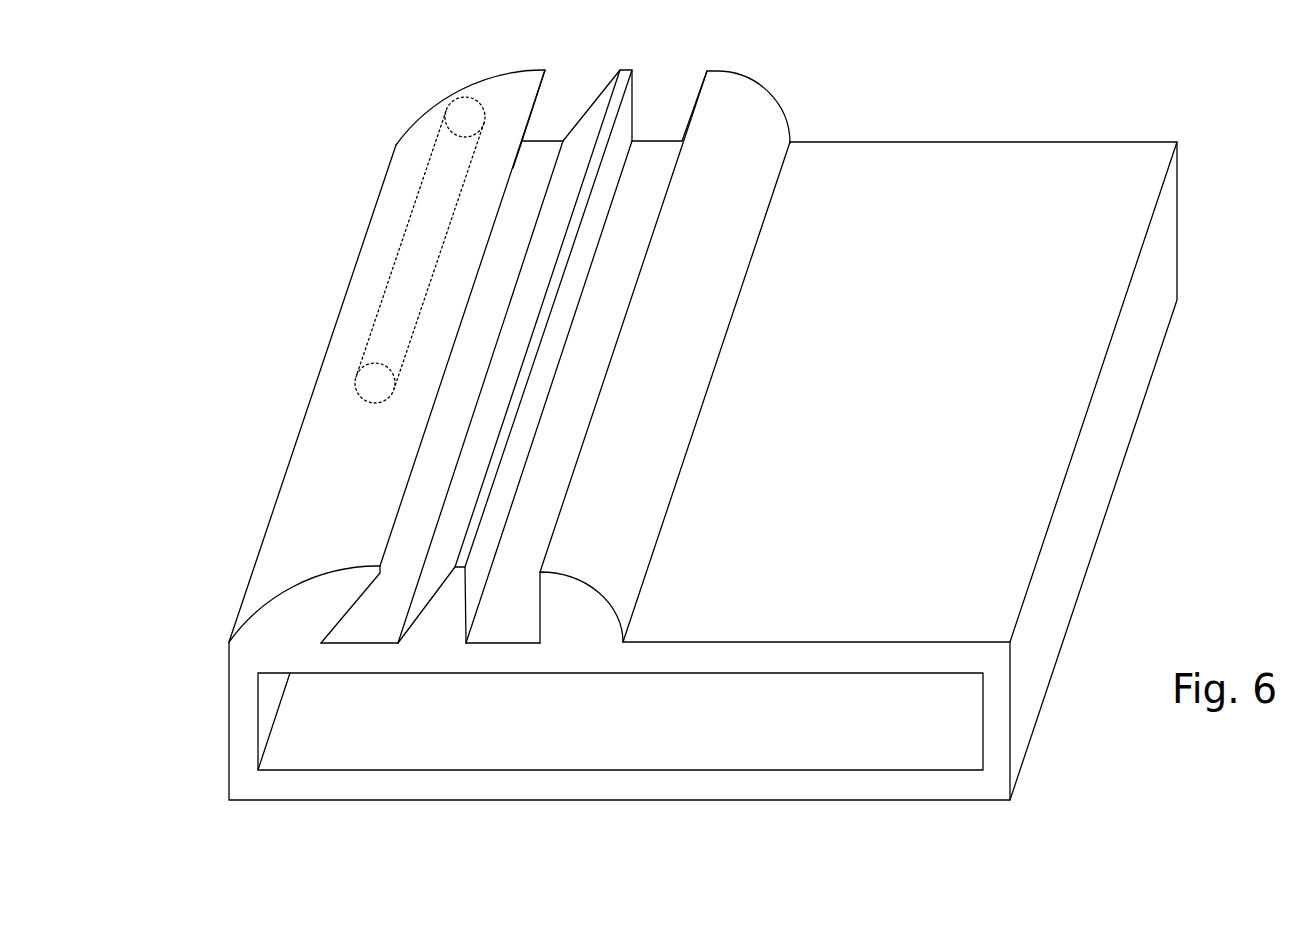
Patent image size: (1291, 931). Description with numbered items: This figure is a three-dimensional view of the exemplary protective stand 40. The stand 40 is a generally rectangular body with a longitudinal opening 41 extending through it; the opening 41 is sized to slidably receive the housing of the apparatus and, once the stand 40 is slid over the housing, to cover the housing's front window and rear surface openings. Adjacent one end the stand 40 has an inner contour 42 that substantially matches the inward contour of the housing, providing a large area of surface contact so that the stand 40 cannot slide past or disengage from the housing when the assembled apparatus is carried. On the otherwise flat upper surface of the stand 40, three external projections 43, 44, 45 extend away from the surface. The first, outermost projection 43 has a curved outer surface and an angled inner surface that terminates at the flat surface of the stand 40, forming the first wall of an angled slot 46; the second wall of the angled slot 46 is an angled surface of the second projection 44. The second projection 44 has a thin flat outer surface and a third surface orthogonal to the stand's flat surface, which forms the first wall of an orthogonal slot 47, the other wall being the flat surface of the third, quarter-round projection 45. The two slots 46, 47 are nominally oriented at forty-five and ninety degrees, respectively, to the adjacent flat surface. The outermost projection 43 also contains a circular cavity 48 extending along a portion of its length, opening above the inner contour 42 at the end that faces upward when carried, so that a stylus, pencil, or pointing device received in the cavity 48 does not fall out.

The protective stand 40 is at (1175, 575).
The longitudinal opening 41 is at (615, 740).
The inner contour 42 is at (1142, 158).
The first outermost projection 43 is at (408, 155).
The second projection 44 is at (627, 72).
The third quarter-round projection 45 is at (767, 118).
The angled slot 46 is at (568, 80).
The orthogonal slot 47 is at (673, 85).
The circular cavity 48 is at (443, 112).